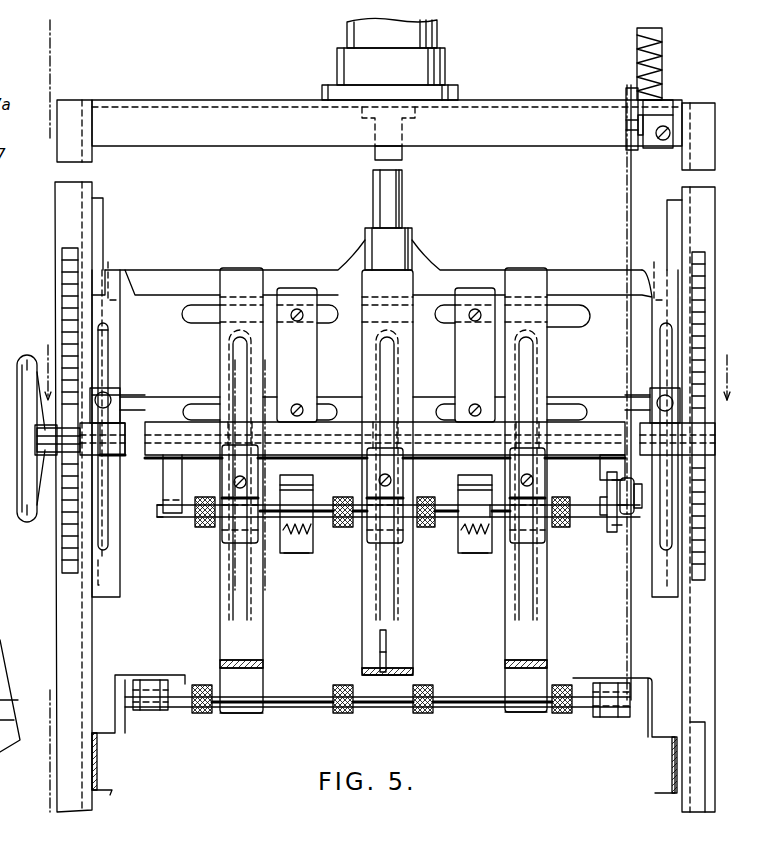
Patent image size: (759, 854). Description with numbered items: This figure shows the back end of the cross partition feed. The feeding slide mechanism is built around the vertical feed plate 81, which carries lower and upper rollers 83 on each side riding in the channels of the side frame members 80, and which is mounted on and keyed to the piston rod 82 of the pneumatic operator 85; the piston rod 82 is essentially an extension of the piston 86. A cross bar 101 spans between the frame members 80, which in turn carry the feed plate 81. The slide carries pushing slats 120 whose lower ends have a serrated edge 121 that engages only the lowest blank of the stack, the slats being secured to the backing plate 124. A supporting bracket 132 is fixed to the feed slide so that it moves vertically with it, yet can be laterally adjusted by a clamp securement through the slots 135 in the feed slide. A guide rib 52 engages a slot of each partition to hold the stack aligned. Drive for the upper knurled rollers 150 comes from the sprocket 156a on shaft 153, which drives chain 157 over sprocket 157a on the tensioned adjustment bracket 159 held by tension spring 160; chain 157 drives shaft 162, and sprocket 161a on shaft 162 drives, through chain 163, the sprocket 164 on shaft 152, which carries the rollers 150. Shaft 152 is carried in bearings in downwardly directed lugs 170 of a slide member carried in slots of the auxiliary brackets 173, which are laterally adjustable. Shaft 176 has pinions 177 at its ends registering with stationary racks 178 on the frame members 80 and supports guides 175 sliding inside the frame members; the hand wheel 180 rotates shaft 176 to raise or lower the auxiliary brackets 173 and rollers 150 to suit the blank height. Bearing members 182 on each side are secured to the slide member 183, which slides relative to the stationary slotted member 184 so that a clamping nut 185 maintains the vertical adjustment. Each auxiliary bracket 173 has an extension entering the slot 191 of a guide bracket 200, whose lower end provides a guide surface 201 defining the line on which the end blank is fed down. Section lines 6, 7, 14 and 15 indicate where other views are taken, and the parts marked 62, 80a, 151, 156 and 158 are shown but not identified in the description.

The section line 6- 6 is at (48, 38).
The section line 7- 7 is at (391, 372).
The section line 14- 14 is at (232, 573).
The section line 15- 15 is at (262, 573).
The guide rib 52 is at (390, 646).
The base plate 62 is at (392, 675).
The frame member 80 is at (104, 206).
The outer post 80a is at (704, 108).
The vertical feed plate 81 is at (432, 266).
The piston rod 82 is at (372, 181).
The roller 83 is at (102, 268).
The pneumatic operator 85 is at (442, 66).
The piston 86 is at (362, 117).
The cross bar 101 is at (208, 114).
The pushing slat 120 is at (306, 492).
The serrated edge 121 is at (303, 534).
The backing plate 124 is at (300, 556).
The supporting bracket 132 is at (317, 395).
The slot 135 is at (200, 310).
The upper knurled roller 150 is at (205, 527).
The knurled nut 151 is at (200, 688).
The shaft 152 is at (492, 520).
The shaft 153 is at (482, 684).
The coupling 156 is at (135, 712).
The sprocket 156a is at (622, 720).
The chain 157 is at (628, 165).
The sprocket 157a is at (628, 92).
The pin 158 is at (630, 520).
The tensioned adjustment bracket 159 is at (660, 102).
The tension spring 160 is at (660, 58).
The sprocket 161a is at (645, 480).
The shaft 162 is at (640, 492).
The chain 163 is at (610, 470).
The sprocket 164 is at (612, 520).
The downwardly directed lug 170 is at (170, 490).
The auxiliary bracket 173 is at (236, 524).
The guide 175 is at (113, 300).
The shaft 176 is at (137, 430).
The pinion 177 is at (40, 522).
The stationary rack 178 is at (65, 276).
The hand wheel 180 is at (26, 360).
The bearing member 182 is at (126, 456).
The slide member 183 is at (110, 398).
The stationary slotted member 184 is at (106, 348).
The clamping nut 185 is at (106, 380).
The slot 191 is at (238, 348).
The guide bracket 200 is at (248, 278).
The guide surface 201 is at (265, 692).